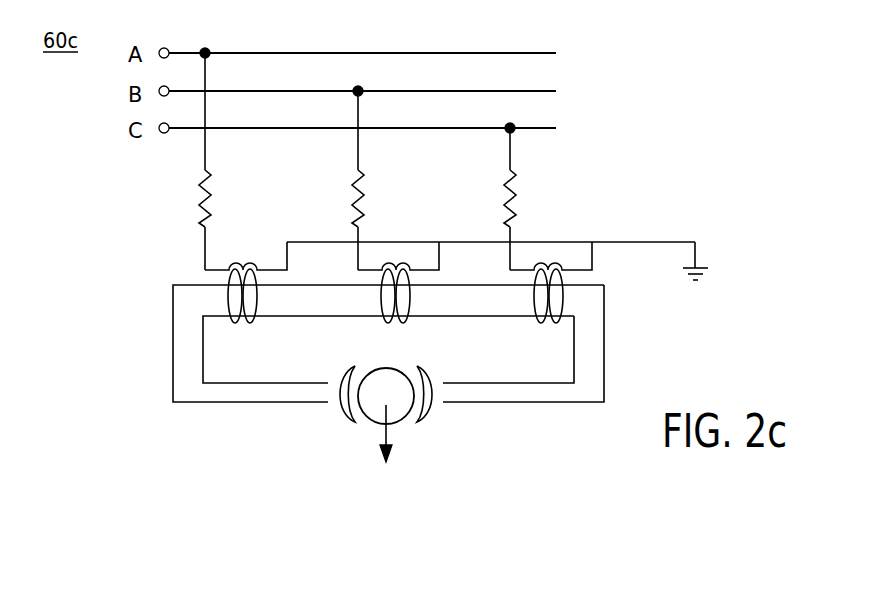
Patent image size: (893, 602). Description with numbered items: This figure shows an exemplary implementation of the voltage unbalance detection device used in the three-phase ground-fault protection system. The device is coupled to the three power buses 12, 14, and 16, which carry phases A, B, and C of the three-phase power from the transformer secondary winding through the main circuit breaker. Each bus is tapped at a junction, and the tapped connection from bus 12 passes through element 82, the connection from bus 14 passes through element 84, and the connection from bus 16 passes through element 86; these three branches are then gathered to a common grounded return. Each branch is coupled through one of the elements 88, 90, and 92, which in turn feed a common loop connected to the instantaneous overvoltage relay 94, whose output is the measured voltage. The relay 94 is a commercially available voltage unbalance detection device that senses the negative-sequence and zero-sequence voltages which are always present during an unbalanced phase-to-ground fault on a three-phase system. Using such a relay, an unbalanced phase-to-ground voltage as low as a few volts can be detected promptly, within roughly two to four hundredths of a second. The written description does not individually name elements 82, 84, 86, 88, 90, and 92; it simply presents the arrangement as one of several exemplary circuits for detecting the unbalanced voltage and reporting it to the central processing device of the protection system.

The power bus 12 is at (540, 52).
The power bus 14 is at (540, 90).
The power bus 16 is at (540, 127).
The impedance Z (phase A) 82 is at (218, 209).
The impedance Z (phase B) 84 is at (375, 196).
The impedance Z (phase C) 86 is at (525, 193).
The current transformer (phase A) 88 is at (268, 292).
The current transformer (phase B) 90 is at (412, 292).
The current transformer (phase C) 92 is at (564, 292).
The instantaneous overvoltage relay 94 is at (356, 436).